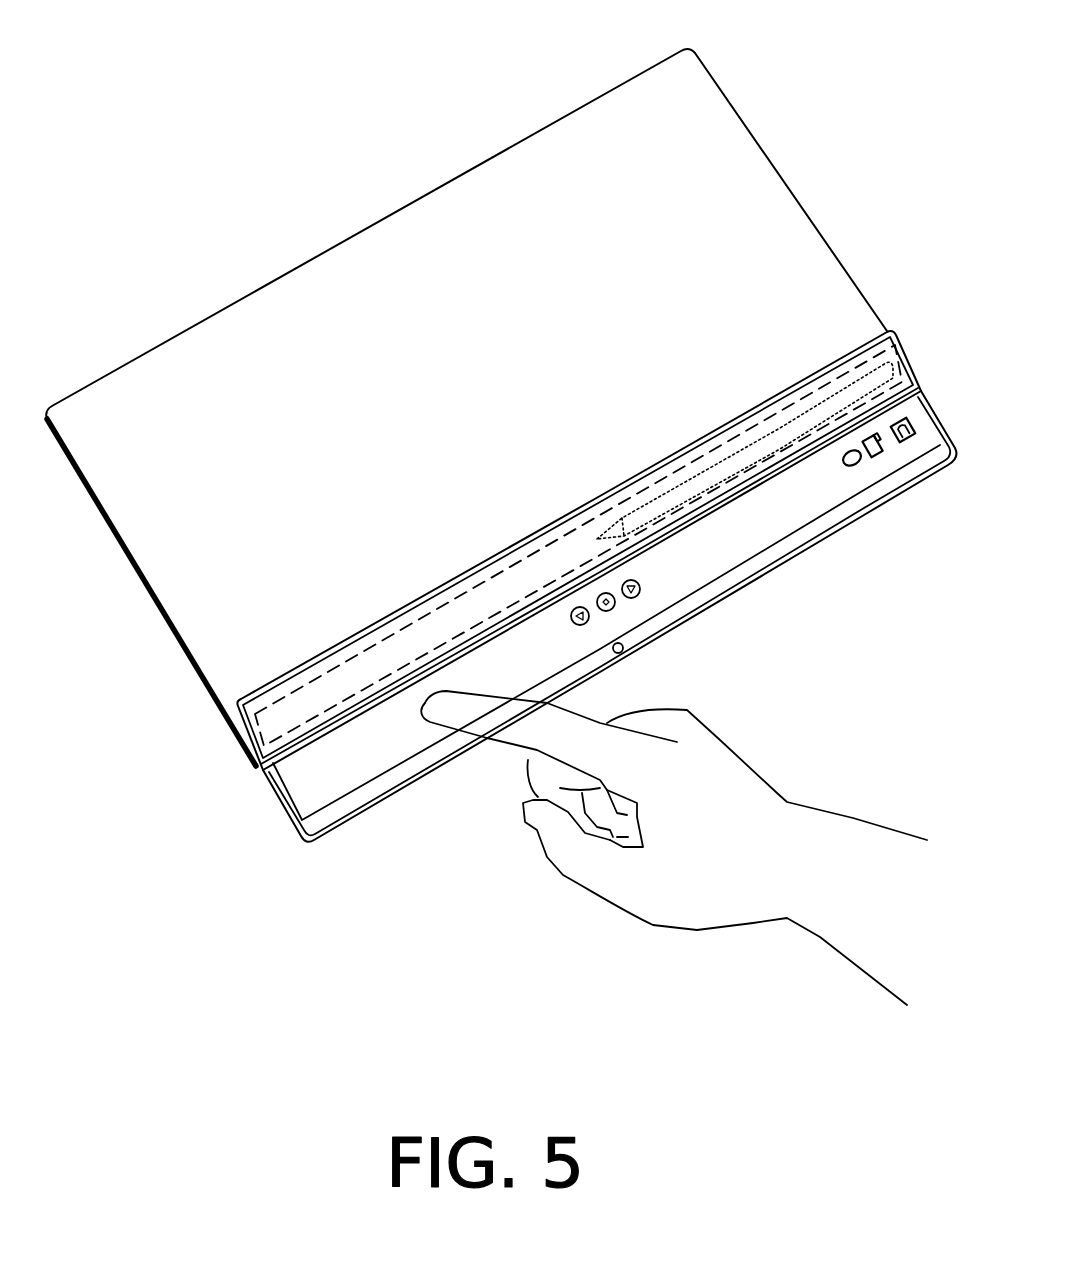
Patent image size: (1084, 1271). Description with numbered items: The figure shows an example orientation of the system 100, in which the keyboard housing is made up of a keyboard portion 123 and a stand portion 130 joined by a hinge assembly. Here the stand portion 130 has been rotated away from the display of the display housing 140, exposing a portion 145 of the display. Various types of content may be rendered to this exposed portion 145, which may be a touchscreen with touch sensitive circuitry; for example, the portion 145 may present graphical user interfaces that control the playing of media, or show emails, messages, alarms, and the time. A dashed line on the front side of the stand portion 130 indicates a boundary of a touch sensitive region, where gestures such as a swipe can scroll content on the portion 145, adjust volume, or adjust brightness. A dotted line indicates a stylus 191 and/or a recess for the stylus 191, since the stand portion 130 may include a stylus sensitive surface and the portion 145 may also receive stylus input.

The system 100 is at (178, 231).
The keyboard portion 123 is at (758, 137).
The stand portion 130 is at (702, 437).
The stylus 191 is at (768, 430).
The display housing 140 is at (776, 572).
The portion of the display 145 is at (771, 534).